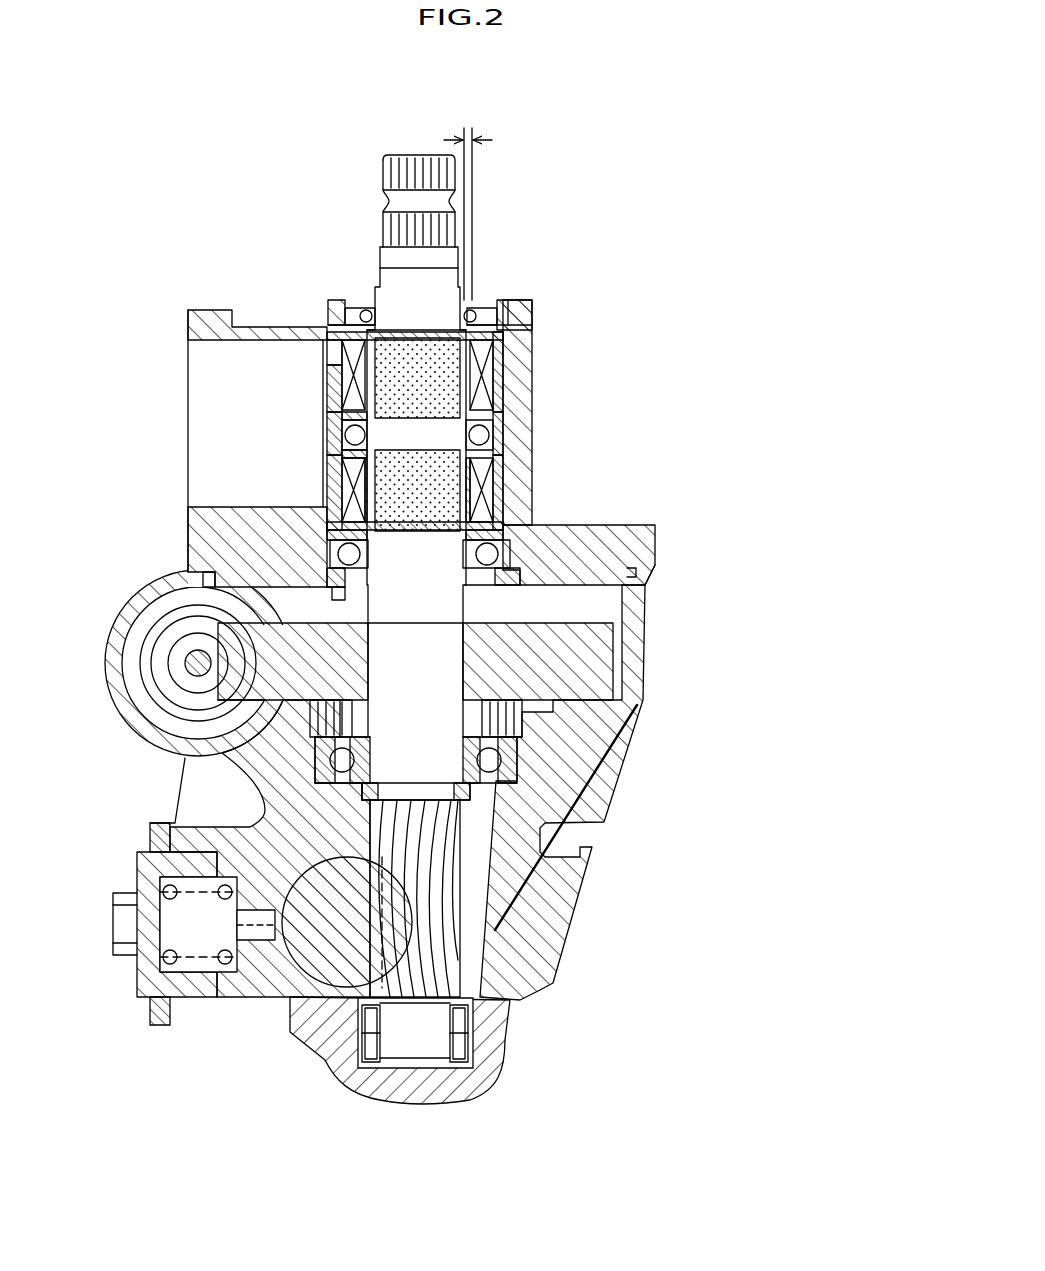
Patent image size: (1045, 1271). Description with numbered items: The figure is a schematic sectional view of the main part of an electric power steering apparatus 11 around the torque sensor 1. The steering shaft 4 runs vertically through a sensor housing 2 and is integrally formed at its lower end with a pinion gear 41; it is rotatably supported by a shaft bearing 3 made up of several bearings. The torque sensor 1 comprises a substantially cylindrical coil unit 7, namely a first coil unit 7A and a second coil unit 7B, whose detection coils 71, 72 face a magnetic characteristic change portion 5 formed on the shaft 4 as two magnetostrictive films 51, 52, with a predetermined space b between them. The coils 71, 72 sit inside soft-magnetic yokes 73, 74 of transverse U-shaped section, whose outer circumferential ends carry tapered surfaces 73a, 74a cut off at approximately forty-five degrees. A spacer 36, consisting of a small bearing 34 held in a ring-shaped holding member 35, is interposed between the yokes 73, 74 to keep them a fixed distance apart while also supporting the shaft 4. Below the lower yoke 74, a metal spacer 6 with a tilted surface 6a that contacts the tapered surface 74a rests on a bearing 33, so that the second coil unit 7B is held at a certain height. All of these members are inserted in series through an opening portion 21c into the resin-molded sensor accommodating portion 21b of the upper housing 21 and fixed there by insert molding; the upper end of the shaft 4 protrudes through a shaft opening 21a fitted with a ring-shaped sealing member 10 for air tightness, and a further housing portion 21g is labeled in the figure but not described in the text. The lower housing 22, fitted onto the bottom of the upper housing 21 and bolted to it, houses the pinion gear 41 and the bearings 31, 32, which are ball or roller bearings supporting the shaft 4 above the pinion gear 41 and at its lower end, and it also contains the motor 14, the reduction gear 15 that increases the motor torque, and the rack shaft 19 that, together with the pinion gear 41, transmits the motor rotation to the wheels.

The torque sensor 1 is at (305, 315).
The sensor housing 2 is at (658, 562).
The shaft bearing 3 is at (523, 778).
The shaft 4 is at (412, 153).
The magnetic characteristic change portion 5 is at (376, 500).
The spacer 6 is at (512, 530).
The tilted surface 6a is at (365, 497).
The coil unit 7 is at (530, 300).
The first coil unit 7A is at (666, 347).
The second coil unit 7B is at (666, 489).
The sealing member 10 is at (503, 298).
The electric power steering apparatus 11 is at (537, 190).
The motor 14 is at (105, 658).
The reduction gear 15 is at (216, 706).
The rack shaft 19 is at (282, 985).
The upper housing 21 is at (521, 296).
The shaft opening 21a is at (355, 315).
The sensor accommodating portion 21b is at (343, 366).
The opening portion 21c is at (348, 590).
The housing flange portion 21g is at (657, 538).
The lower housing 22 is at (645, 700).
The bearing 31 is at (520, 755).
The bearing 32 is at (472, 1045).
The bearing 33 is at (300, 557).
The bearing 34 is at (350, 433).
The ring-shaped holding member 35 is at (345, 447).
The spacer 36 is at (500, 432).
The pinion gear 41 is at (465, 905).
The magnetostrictive film 51 is at (376, 388).
The magnetostrictive film 52 is at (376, 478).
The coil 71 is at (482, 366).
The coil 72 is at (484, 488).
The yoke 73 is at (499, 372).
The tapered surface 73a is at (499, 400).
The yoke 74 is at (499, 512).
The tapered surface 74a is at (499, 460).